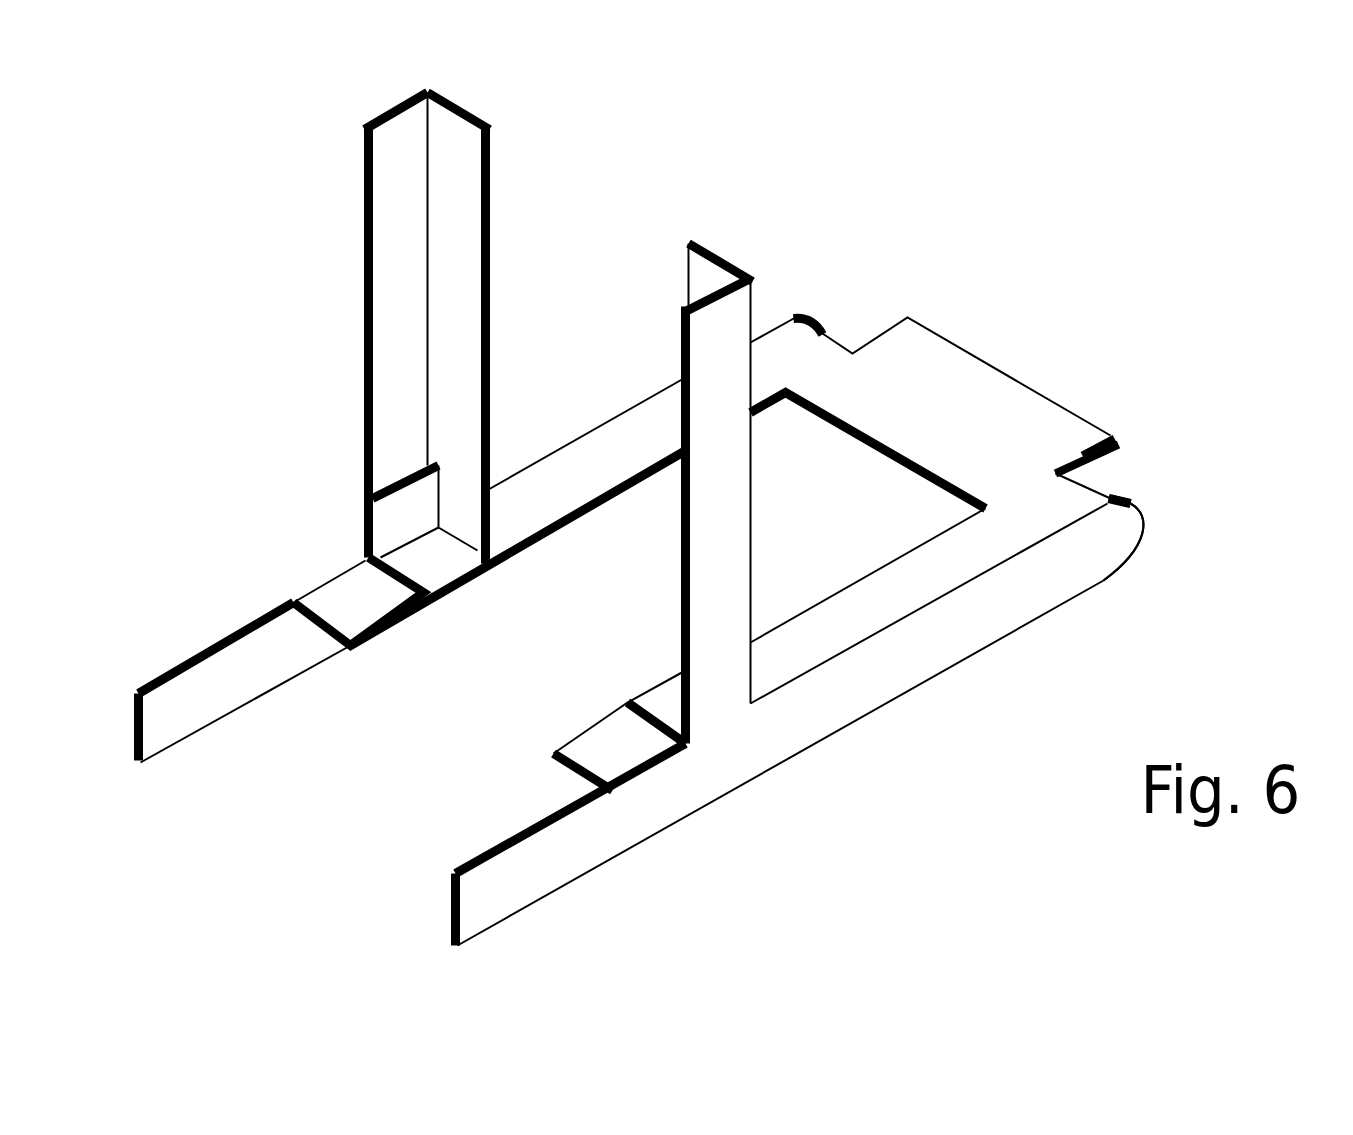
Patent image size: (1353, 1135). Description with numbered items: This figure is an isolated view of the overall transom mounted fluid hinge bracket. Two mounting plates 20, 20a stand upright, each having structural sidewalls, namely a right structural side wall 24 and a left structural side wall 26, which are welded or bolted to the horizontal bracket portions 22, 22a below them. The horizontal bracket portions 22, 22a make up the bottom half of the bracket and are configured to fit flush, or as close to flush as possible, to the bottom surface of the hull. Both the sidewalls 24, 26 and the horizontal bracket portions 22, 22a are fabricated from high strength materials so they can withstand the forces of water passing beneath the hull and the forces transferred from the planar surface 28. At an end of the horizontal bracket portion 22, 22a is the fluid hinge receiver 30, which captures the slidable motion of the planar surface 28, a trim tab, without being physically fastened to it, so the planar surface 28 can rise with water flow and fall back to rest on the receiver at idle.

The mounting plate 20 is at (396, 337).
The mounting plate 20a is at (659, 462).
The horizontal bracket portion 22 is at (578, 445).
The horizontal bracket portion 22a is at (822, 648).
The right structural side wall 24 is at (400, 152).
The left structural side wall 26 is at (710, 580).
The planar surface 28 is at (1110, 437).
The fluid hinge receiver 30 is at (1090, 470).